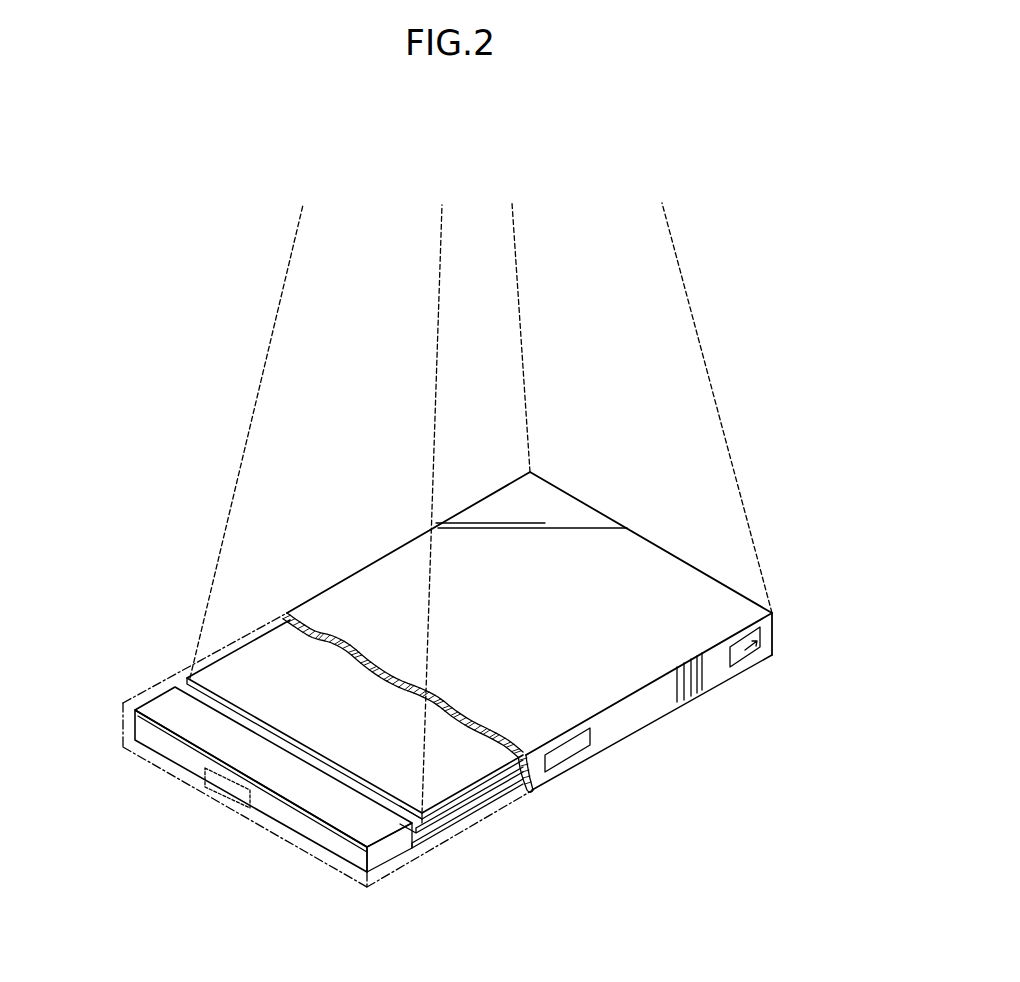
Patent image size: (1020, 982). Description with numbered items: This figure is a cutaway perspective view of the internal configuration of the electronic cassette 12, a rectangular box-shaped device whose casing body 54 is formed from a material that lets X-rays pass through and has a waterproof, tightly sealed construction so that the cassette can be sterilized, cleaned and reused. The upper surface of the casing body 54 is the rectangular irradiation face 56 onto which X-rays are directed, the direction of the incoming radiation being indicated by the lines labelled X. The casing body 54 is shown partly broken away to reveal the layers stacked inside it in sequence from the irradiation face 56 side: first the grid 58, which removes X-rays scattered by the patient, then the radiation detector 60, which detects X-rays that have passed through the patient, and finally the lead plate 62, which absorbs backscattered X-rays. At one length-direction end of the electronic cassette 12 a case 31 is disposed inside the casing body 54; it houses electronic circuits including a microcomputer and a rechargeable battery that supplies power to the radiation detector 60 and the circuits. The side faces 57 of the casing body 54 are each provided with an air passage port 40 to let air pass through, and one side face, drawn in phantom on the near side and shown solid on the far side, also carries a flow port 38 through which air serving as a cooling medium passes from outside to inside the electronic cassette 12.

The electronic cassette 12 is at (487, 468).
The direction X is at (255, 407).
The casing body 54 is at (585, 493).
The irradiation face 56 is at (686, 580).
The side faces 57 is at (130, 715).
The flow port 38 is at (745, 650).
The air passage port 40 is at (203, 788).
The grid 58 is at (486, 730).
The radiation detector 60 is at (490, 787).
The lead plate 62 is at (472, 815).
The case 31 is at (388, 852).